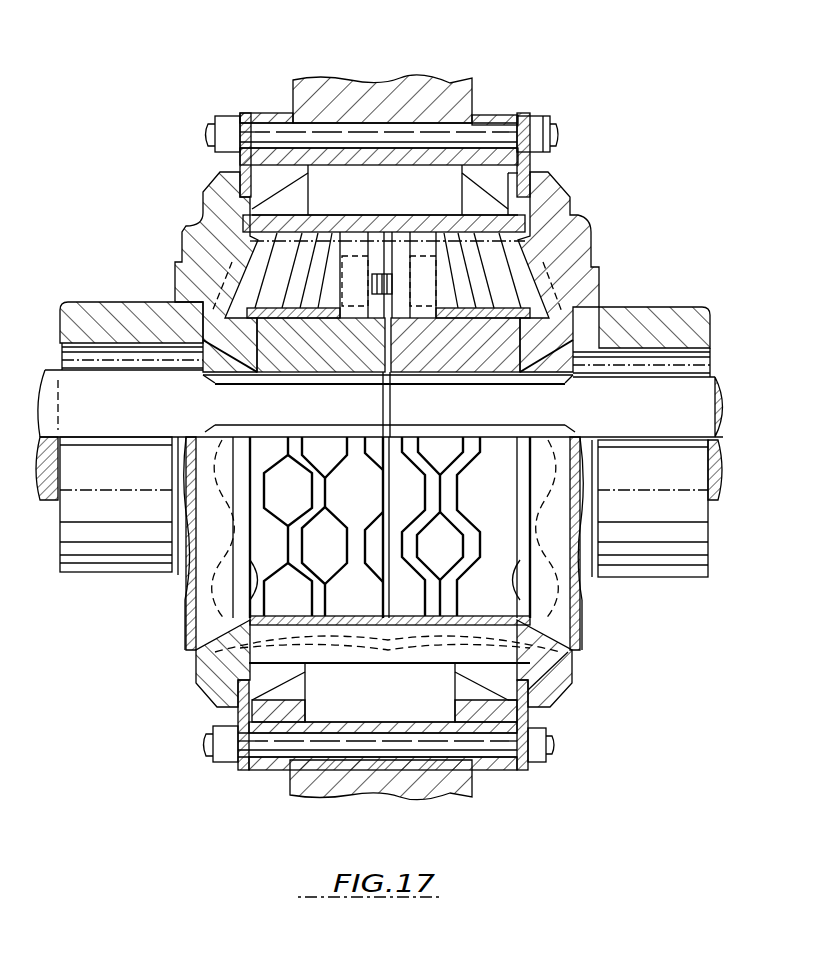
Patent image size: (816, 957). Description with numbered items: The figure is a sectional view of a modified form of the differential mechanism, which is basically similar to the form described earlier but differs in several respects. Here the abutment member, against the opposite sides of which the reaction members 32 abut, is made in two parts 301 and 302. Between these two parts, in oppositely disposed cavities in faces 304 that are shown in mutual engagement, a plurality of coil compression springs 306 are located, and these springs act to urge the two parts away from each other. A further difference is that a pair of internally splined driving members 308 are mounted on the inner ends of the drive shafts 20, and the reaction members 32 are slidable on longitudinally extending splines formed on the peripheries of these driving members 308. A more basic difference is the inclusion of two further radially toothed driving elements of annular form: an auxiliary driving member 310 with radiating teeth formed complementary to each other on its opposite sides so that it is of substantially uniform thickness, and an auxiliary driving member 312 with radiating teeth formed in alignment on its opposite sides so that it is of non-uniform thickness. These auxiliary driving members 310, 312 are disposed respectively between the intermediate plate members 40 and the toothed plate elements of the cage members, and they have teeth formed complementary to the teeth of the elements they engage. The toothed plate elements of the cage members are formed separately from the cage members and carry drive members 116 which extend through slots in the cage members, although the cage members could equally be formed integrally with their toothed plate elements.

The drive shafts 20 is at (98, 408).
The reaction members 32 is at (320, 286).
The intermediate plate members 40 is at (250, 620).
The drive members 116 is at (562, 670).
The abutment member part 301 is at (352, 248).
The abutment member part 302 is at (414, 248).
The faces 304 is at (380, 582).
The coil compression springs 306 is at (415, 318).
The internally splined driving members 308 is at (388, 360).
The auxiliary driving member 310 is at (255, 582).
The auxiliary driving member 312 is at (586, 600).